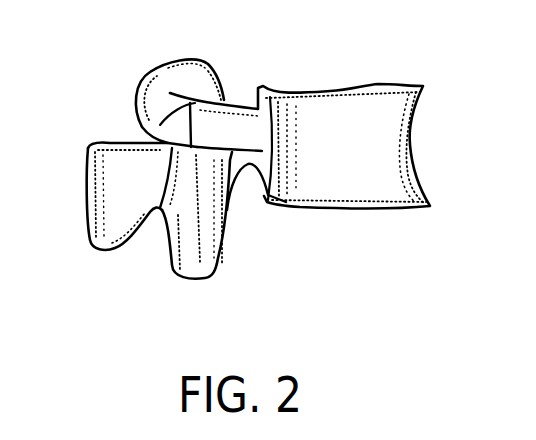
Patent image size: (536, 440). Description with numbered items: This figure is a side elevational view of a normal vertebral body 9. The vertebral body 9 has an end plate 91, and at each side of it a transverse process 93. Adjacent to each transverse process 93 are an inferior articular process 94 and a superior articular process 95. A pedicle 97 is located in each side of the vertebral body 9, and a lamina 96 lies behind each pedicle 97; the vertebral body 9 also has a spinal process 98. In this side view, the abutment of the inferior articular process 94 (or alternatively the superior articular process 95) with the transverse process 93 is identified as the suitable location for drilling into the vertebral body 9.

The vertebral body 9 is at (413, 136).
The end plate 91 is at (384, 84).
The transverse process 93 is at (218, 90).
The inferior articular process 94 is at (188, 278).
The superior articular process 95 is at (185, 58).
The lamina 96 is at (157, 212).
The pedicle 97 is at (248, 172).
The spinal process 98 is at (100, 199).